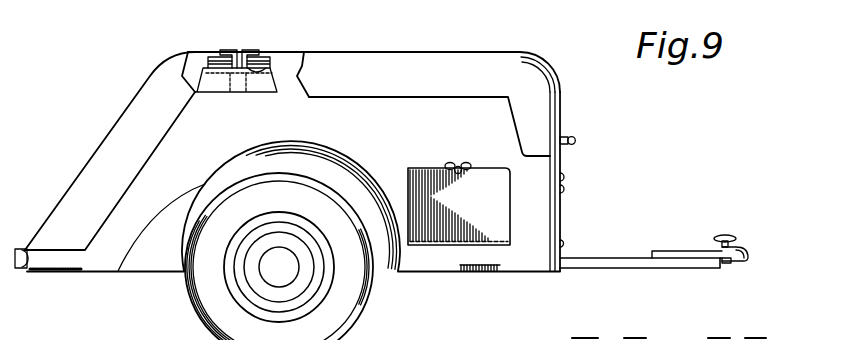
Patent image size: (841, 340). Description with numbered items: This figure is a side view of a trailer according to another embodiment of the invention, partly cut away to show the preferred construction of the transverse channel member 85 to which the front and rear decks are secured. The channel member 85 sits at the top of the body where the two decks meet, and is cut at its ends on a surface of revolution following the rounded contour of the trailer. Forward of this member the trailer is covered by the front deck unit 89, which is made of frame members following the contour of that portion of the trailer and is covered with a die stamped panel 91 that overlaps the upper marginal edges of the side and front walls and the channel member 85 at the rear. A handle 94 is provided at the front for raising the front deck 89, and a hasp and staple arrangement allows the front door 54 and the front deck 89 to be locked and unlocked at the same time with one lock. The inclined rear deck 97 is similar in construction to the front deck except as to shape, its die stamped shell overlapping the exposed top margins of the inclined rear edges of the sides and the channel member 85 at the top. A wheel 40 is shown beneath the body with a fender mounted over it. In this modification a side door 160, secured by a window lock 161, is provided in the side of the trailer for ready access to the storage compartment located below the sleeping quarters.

The wheel 40 is at (207, 322).
The front door 54 is at (563, 207).
The channel member 85 is at (253, 70).
The deck unit 89 is at (448, 52).
The die stamped panel 91 is at (543, 83).
The handle 94 is at (575, 140).
The rear deck 97 is at (118, 121).
The side door 160 is at (422, 180).
The window lock 161 is at (457, 162).